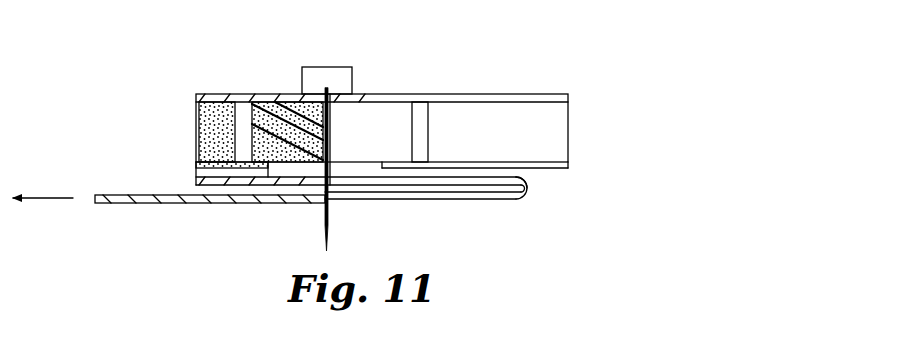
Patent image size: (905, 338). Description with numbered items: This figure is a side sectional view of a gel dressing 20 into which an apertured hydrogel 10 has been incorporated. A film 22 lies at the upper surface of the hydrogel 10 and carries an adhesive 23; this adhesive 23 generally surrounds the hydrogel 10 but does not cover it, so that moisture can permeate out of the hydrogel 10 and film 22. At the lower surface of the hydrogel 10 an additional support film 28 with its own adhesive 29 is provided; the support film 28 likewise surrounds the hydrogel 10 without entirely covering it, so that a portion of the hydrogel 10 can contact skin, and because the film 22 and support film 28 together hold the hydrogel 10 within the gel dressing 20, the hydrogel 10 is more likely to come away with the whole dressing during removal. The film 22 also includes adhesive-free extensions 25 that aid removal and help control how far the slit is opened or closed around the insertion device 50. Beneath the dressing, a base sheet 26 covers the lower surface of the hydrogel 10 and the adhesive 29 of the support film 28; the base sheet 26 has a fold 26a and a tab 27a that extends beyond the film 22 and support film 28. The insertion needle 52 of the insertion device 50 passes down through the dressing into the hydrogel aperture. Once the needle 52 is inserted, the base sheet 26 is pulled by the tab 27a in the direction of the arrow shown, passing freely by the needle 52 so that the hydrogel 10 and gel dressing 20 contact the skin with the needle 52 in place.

The gel dressing 20 is at (548, 36).
The film 22 is at (390, 96).
The apertured hydrogel 10 is at (282, 93).
The insertion device 50 is at (318, 77).
The adhesive 23 is at (558, 128).
The support film 28 is at (563, 167).
The adhesive-free extensions 25 is at (522, 173).
The base sheet 26 is at (435, 200).
The fold 26a is at (530, 203).
The adhesive 29 is at (530, 177).
The insertion needle 52 is at (323, 221).
The tab 27a is at (115, 196).